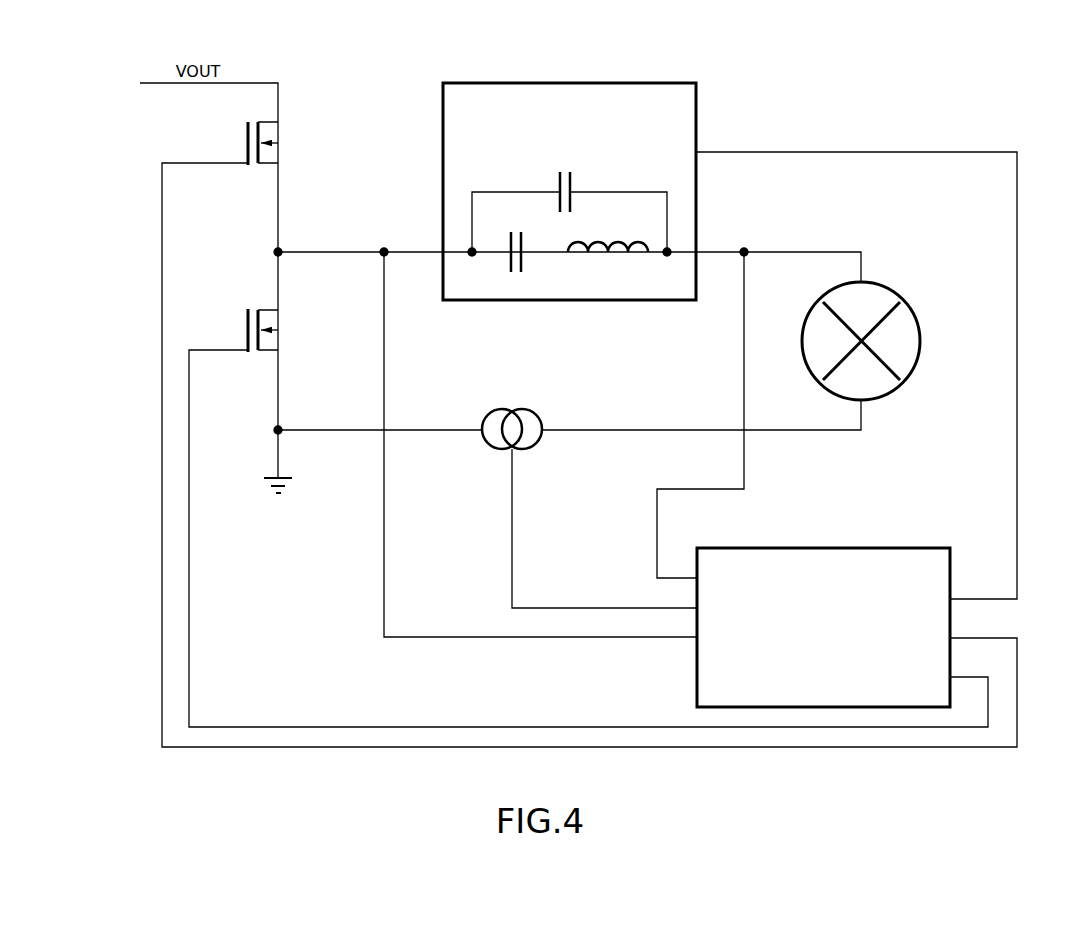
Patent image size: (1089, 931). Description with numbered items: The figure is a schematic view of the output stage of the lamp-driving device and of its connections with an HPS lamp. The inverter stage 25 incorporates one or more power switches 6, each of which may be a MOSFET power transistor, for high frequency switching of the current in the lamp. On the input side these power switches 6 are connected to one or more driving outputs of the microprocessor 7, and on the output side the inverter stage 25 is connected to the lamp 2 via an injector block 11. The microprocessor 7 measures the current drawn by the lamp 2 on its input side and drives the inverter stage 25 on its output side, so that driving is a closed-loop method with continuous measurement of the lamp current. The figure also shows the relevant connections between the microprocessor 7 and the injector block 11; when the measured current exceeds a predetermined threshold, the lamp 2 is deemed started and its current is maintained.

The inverter stage 25 is at (236, 189).
The power switch 6 is at (231, 373).
The injector block 11 is at (665, 129).
The lamp 2 is at (904, 329).
The microprocessor 7 is at (845, 680).